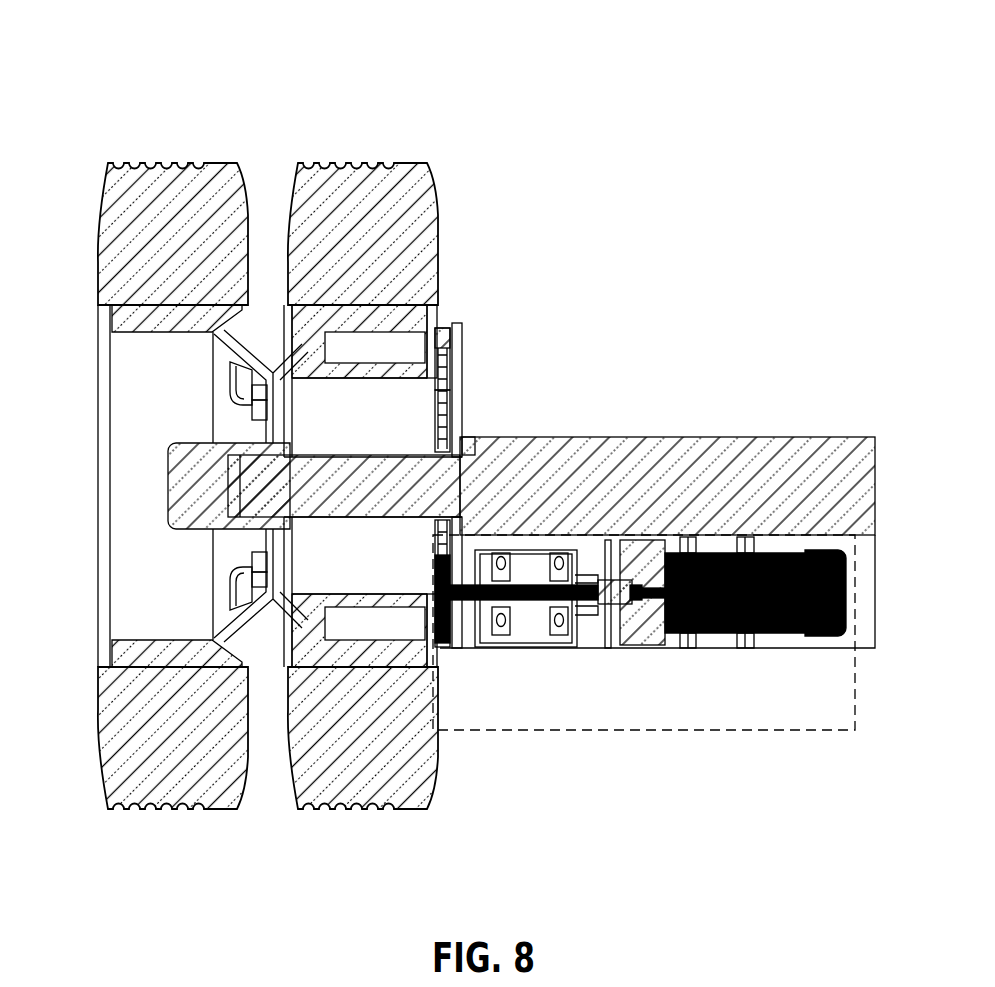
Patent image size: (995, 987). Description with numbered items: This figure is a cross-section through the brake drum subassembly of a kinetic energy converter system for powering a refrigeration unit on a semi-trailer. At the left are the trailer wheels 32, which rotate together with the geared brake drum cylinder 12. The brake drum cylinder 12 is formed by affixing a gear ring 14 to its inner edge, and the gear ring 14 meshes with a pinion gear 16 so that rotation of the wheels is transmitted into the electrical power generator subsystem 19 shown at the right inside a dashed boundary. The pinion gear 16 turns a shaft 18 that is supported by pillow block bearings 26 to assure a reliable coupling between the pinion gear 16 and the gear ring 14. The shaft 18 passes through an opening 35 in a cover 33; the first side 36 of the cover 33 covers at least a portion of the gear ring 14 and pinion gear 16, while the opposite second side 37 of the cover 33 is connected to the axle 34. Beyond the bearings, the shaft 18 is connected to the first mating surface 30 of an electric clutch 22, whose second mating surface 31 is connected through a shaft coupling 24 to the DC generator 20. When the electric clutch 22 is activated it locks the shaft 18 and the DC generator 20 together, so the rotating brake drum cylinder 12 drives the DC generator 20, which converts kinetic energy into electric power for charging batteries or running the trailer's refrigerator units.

The first mating surface 30 is at (131, 95).
The trailer wheels 32 is at (120, 330).
The geared brake drum cylinder 12 is at (383, 360).
The first side 36 is at (446, 367).
The cover 33 is at (452, 405).
The gear ring 14 is at (463, 395).
The second side 37 is at (464, 438).
The axle 34 is at (500, 437).
The opening 35 is at (448, 585).
The pinion gear 16 is at (455, 627).
The pillow block bearings 26 is at (503, 630).
The shaft 18 is at (556, 625).
The shaft coupling 24 is at (643, 558).
The electric clutch 22 is at (682, 540).
The second mating surface 31 is at (736, 540).
The DC generator 20 is at (748, 553).
The electrical power generator subsystem 19 is at (815, 697).